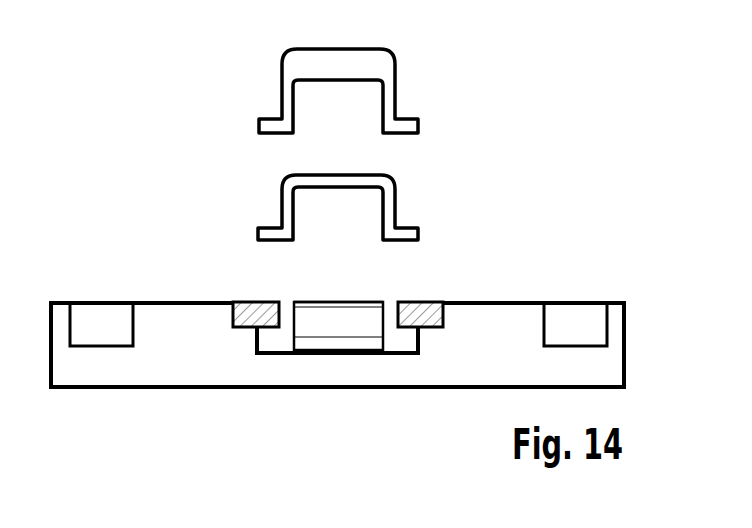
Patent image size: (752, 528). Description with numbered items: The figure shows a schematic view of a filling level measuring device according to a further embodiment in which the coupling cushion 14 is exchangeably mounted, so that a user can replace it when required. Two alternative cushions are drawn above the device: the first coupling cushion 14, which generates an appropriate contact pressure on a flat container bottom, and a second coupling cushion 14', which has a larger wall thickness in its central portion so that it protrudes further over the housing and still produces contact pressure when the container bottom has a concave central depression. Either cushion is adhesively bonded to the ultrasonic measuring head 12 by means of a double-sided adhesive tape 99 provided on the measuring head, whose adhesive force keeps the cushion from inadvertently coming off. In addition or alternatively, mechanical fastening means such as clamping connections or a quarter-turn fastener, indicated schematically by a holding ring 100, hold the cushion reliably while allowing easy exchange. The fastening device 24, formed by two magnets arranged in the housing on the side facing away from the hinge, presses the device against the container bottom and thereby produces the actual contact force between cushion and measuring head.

The second coupling cushion 14' is at (379, 90).
The coupling cushion 14 is at (377, 201).
The fastening device 24 is at (100, 316).
The holding ring 100 is at (255, 313).
The ultrasonic measuring head 12 is at (336, 323).
The double-sided adhesive tape 99 is at (352, 300).